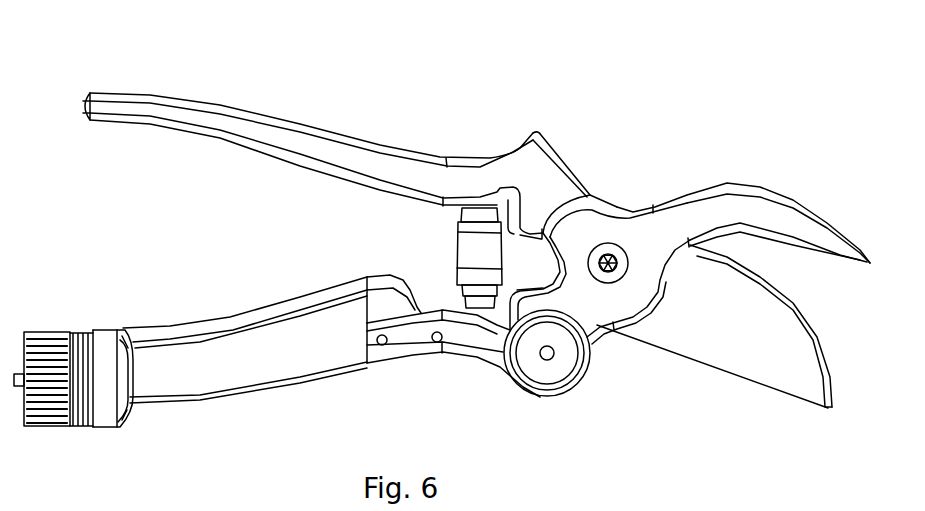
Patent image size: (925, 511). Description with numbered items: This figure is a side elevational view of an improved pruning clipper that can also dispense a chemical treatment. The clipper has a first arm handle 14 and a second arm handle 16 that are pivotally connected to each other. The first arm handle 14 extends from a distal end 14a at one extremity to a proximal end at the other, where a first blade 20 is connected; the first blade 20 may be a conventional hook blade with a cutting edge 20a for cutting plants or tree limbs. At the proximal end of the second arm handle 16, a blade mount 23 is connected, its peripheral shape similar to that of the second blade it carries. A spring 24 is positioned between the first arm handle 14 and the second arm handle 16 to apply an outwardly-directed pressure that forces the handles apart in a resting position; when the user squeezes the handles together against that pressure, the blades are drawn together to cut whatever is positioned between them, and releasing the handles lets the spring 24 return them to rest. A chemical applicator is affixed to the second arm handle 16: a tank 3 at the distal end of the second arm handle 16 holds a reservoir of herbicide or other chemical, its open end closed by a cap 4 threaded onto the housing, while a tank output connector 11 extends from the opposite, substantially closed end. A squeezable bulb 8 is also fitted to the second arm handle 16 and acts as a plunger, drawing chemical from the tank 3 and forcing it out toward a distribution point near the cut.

The tank 3 is at (193, 382).
The cap 4 is at (62, 338).
The bulb 8 is at (558, 370).
The tank output connector 11 is at (402, 275).
The first arm handle 14 is at (320, 72).
The distal end 14a is at (86, 97).
The second arm handle 16 is at (361, 403).
The first blade 20 is at (707, 340).
The cutting edge 20a is at (744, 266).
The blade mount 23 is at (695, 212).
The spring 24 is at (470, 245).